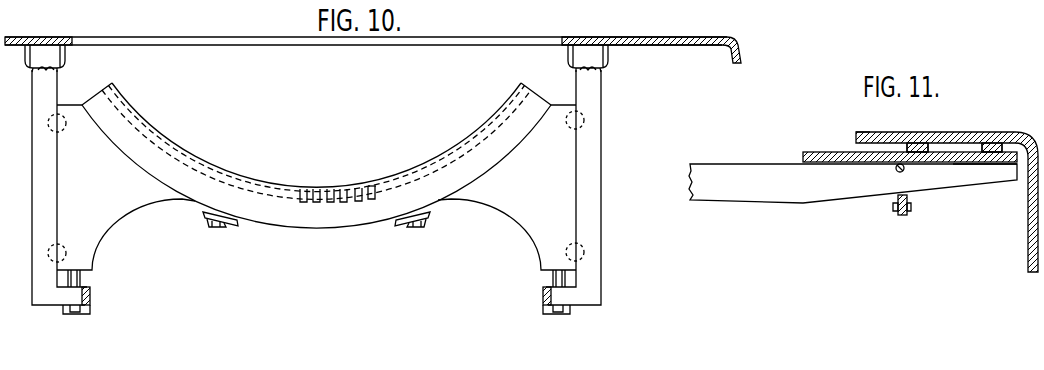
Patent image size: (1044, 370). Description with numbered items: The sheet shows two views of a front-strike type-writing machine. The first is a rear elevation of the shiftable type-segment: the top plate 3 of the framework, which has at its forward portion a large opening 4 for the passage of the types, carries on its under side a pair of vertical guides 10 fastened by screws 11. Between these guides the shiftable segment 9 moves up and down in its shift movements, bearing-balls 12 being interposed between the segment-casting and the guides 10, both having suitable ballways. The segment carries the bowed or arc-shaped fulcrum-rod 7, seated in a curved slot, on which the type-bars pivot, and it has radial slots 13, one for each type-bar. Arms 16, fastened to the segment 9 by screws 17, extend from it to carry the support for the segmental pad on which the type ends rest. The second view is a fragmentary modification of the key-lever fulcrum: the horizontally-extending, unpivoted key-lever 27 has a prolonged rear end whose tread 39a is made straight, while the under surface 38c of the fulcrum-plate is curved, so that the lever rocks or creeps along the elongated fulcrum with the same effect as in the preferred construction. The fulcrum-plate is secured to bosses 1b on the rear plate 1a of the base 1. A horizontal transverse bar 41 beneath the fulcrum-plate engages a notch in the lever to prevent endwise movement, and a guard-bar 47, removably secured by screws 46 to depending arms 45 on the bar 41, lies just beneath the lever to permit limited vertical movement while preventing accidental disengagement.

In FIG. 10, the top plate 3 is at (645, 40).
In FIG. 10, the large opening 4 is at (452, 39).
In FIG. 10, the fulcrum-rod 7 is at (369, 187).
In FIG. 10, the shiftable segment 9 is at (316, 176).
In FIG. 10, the vertical guides 10 is at (316, 192).
In FIG. 10, the screws 11 is at (33, 72).
In FIG. 10, the bearing-balls 12 is at (62, 253).
In FIG. 10, the radial slots 13 is at (316, 189).
In FIG. 10, the arms 16 is at (205, 213).
In FIG. 10, the screws 17 is at (222, 227).
In FIG. 11, the rectangular base 1 is at (1030, 224).
In FIG. 11, the horizontal rear plate 1a is at (858, 132).
In FIG. 11, the bosses 1b is at (925, 132).
In FIG. 11, the key-lever 27 is at (853, 183).
In FIG. 11, the under surface of the fulcrum-plate 38c is at (815, 152).
In FIG. 11, the tread 39a is at (953, 165).
In FIG. 11, the transverse bar 41 is at (896, 170).
In FIG. 11, the depending arms 45 is at (901, 215).
In FIG. 11, the screws 46 is at (893, 209).
In FIG. 11, the guard-bar 47 is at (911, 209).